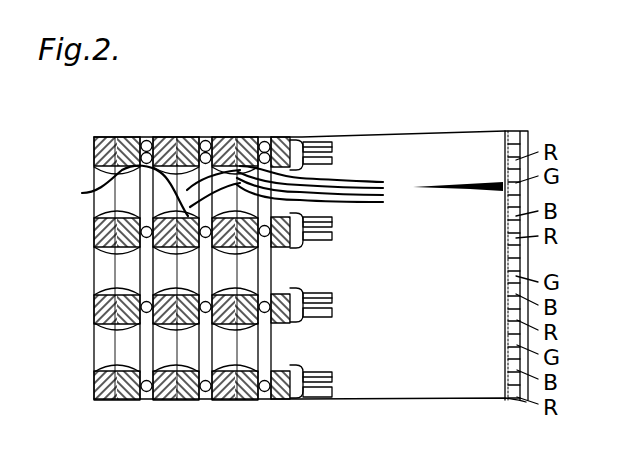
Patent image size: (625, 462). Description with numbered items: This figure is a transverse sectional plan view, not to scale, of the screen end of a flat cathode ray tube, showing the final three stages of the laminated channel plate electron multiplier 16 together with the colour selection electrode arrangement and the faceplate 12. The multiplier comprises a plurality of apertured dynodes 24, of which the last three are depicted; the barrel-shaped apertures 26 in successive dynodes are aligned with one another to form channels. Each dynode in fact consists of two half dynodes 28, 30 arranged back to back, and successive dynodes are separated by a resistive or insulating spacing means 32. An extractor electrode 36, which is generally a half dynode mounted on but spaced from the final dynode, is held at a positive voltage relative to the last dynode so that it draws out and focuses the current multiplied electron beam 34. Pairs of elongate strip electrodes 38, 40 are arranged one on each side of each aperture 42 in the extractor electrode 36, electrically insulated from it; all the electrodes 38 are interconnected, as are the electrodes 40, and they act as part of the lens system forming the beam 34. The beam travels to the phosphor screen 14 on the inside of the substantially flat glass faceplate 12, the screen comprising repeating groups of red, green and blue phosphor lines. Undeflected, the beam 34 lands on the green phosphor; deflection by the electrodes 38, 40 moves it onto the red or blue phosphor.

The faceplate 12 is at (523, 130).
The phosphor screen 14 is at (502, 131).
The channel plate electron multiplier 16 is at (92, 226).
The apertured dynodes 24 is at (111, 133).
The barrel-shaped apertures 26 is at (113, 328).
The half dynode 28 is at (100, 387).
The half dynode 30 is at (129, 399).
The spacing means 32 is at (143, 233).
The current multiplied electron beam 34 is at (428, 184).
The extractor electrode 36 is at (281, 138).
The strip electrode 38 is at (318, 141).
The strip electrode 40 is at (338, 157).
The aperture 42 is at (287, 396).